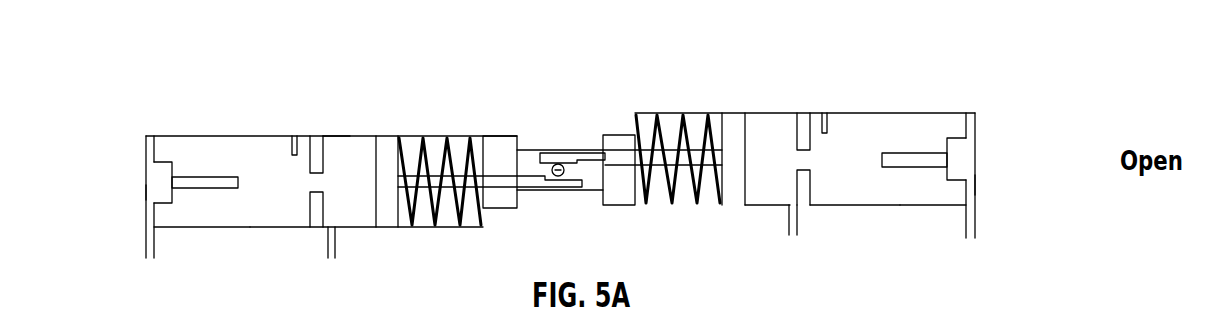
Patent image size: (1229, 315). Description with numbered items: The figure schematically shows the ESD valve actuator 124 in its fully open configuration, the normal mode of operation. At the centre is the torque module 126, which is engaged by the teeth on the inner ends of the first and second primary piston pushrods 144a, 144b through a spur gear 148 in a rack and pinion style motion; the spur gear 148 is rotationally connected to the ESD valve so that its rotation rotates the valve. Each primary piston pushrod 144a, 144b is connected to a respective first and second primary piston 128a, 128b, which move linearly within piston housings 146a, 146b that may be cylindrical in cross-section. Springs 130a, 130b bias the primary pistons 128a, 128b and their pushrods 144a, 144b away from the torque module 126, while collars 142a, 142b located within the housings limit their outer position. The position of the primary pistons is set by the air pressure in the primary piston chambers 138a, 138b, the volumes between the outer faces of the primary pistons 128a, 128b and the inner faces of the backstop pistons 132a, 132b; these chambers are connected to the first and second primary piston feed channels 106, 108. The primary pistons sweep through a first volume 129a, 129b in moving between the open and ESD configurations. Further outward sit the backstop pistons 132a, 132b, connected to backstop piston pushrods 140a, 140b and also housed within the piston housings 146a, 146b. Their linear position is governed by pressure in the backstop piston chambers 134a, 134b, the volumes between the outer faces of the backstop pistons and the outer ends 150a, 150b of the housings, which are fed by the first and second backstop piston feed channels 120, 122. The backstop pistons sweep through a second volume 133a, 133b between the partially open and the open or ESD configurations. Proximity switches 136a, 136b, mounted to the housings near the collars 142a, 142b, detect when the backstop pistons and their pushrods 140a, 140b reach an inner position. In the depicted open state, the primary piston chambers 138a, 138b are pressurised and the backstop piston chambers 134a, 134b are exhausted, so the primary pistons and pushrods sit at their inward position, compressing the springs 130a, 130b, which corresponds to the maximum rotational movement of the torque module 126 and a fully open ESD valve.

The ESD valve actuator 124 is at (97, 68).
The first backstop piston feed channel 120 is at (146, 243).
The second backstop piston feed channel 122 is at (975, 228).
The torque module 126 is at (560, 146).
The spur gear 148 is at (558, 178).
The first primary piston feed channel 106 is at (337, 242).
The second primary piston feed channel 108 is at (787, 210).
The first backstop piston 132a is at (153, 137).
The second backstop piston 132b is at (968, 114).
The first backstop piston chamber 134a is at (152, 167).
The second backstop piston chamber 134b is at (975, 145).
The outer end of piston housing 150a is at (147, 193).
The outer end of piston housing 150b is at (975, 185).
The first backstop piston pushrod 140a is at (203, 177).
The second backstop piston pushrod 140b is at (910, 158).
The first piston housing 146a is at (187, 230).
The second piston housing 146b is at (937, 208).
The second volume 133a is at (252, 217).
The second volume 133b is at (880, 192).
The first proximity switch 136a is at (293, 136).
The second proximity switch 136b is at (825, 114).
The first collar 142a is at (322, 135).
The second collar 142b is at (807, 147).
The first primary piston chamber 138a is at (335, 137).
The second primary piston chamber 138b is at (790, 120).
The first volume 129a is at (360, 137).
The first volume 129b is at (770, 120).
The first primary piston 128a is at (388, 137).
The second primary piston 128b is at (728, 122).
The first spring 130a is at (430, 148).
The second spring 130b is at (658, 113).
The first primary piston pushrod 144a is at (470, 137).
The second primary piston pushrod 144b is at (705, 138).